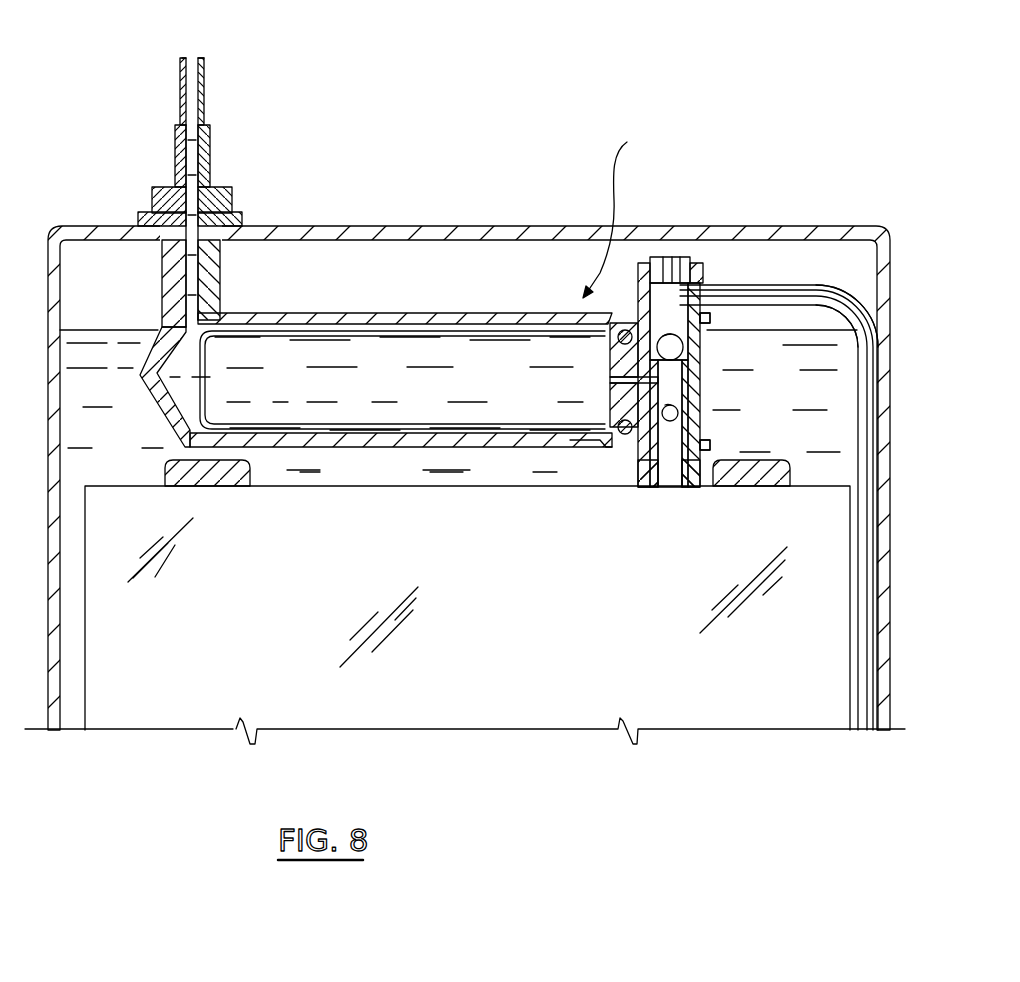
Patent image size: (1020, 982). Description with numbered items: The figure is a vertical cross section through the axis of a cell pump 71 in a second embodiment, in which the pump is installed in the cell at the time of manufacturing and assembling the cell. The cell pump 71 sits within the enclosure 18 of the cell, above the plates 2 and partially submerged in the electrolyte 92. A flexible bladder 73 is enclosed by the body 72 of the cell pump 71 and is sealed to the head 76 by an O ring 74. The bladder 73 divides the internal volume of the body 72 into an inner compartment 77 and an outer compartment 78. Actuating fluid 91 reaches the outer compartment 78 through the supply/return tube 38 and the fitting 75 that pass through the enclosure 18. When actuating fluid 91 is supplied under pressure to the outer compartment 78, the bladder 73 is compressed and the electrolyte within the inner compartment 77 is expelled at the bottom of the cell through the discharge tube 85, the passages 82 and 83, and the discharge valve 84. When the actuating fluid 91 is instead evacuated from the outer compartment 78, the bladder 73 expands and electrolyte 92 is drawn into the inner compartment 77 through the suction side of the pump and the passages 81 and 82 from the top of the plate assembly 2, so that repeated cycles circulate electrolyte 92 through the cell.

The plates 2 is at (230, 690).
The enclosure 18 is at (563, 232).
The supply/return tube 38 is at (181, 105).
The cell pump 71 is at (622, 210).
The body 72 is at (322, 317).
The flexible bladder 73 is at (415, 326).
The O ring 74 is at (665, 335).
The fitting 75 is at (177, 152).
The head 76 is at (710, 412).
The inner compartment 77 is at (273, 360).
The outer compartment 78 is at (490, 330).
The passage 81 is at (714, 418).
The passage 82 is at (703, 405).
The passage 83 is at (626, 329).
The discharge valve 84 is at (695, 408).
The discharge tube 85 is at (840, 310).
The actuating fluid 91 is at (190, 63).
The electrolyte 92 is at (103, 343).